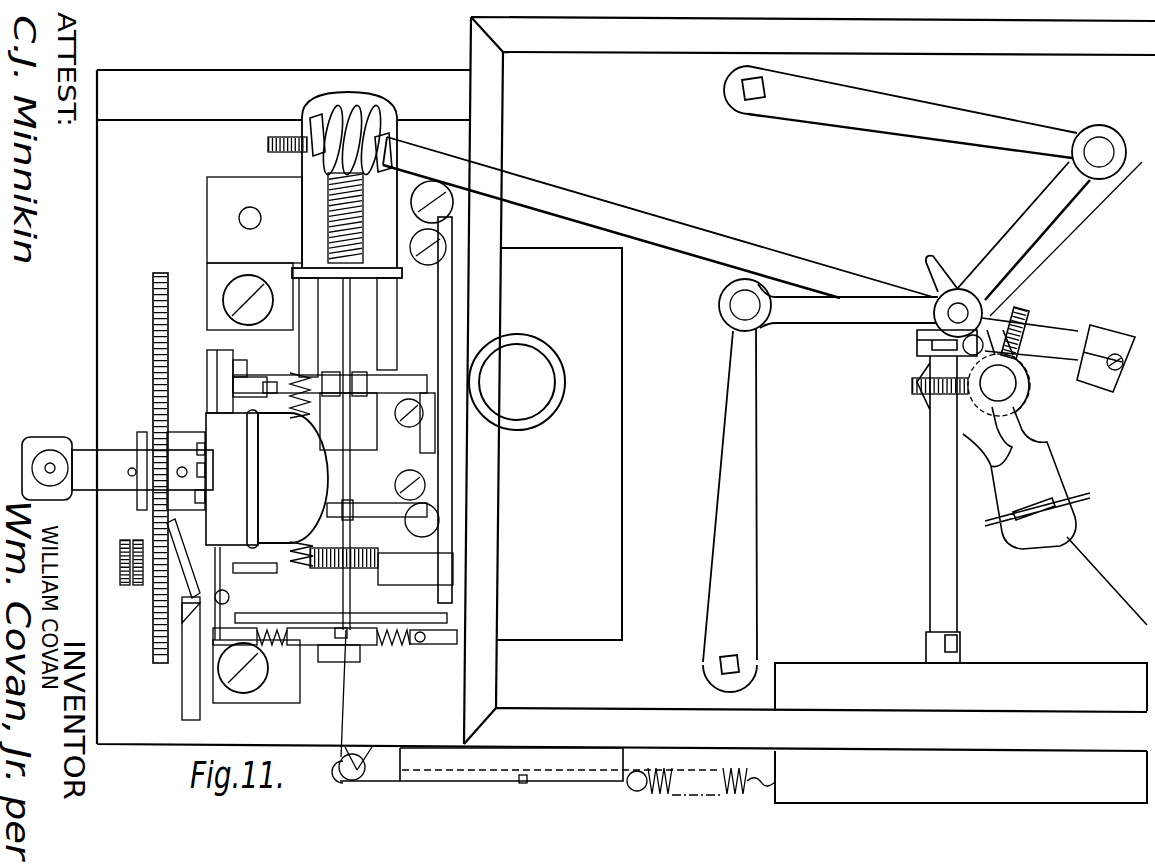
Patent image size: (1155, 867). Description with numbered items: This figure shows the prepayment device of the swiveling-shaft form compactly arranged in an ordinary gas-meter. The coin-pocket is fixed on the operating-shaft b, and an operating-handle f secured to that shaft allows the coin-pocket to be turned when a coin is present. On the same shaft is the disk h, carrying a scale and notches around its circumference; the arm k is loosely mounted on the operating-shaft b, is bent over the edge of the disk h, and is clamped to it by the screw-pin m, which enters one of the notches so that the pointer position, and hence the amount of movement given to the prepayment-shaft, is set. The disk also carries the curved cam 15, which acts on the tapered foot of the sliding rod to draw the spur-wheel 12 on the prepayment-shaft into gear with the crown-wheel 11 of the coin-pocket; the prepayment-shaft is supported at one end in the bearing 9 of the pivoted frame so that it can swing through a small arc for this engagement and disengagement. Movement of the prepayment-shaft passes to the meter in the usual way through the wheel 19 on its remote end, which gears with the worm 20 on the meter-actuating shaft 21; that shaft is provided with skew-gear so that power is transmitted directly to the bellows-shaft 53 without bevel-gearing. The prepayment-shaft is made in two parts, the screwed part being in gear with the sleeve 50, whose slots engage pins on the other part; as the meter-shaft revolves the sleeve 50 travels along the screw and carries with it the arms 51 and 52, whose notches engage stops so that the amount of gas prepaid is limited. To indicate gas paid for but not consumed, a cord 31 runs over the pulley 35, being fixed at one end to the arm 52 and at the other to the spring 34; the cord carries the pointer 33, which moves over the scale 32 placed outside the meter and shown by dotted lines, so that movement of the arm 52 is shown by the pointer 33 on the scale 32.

The wheel 19 is at (268, 145).
The worm 20 is at (373, 138).
The meter-actuating shaft 21 is at (658, 217).
The arm 51 is at (388, 256).
The sleeve 50 is at (365, 332).
The disk h is at (169, 320).
The operating-shaft b is at (142, 471).
The operating-handle f is at (52, 492).
The arm k is at (147, 520).
The screw-pin m is at (122, 564).
The curved cam 15 is at (142, 597).
The bearing 9 is at (258, 487).
The crown-wheel 11 is at (289, 565).
The spur-wheel 12 is at (368, 560).
The arm 52 is at (343, 605).
The bellows-shaft 53 is at (1022, 395).
The pulley 35 is at (352, 779).
The cord 31 is at (481, 779).
The wire 32 is at (561, 760).
The pointer 33 is at (512, 793).
The spring 34 is at (677, 779).